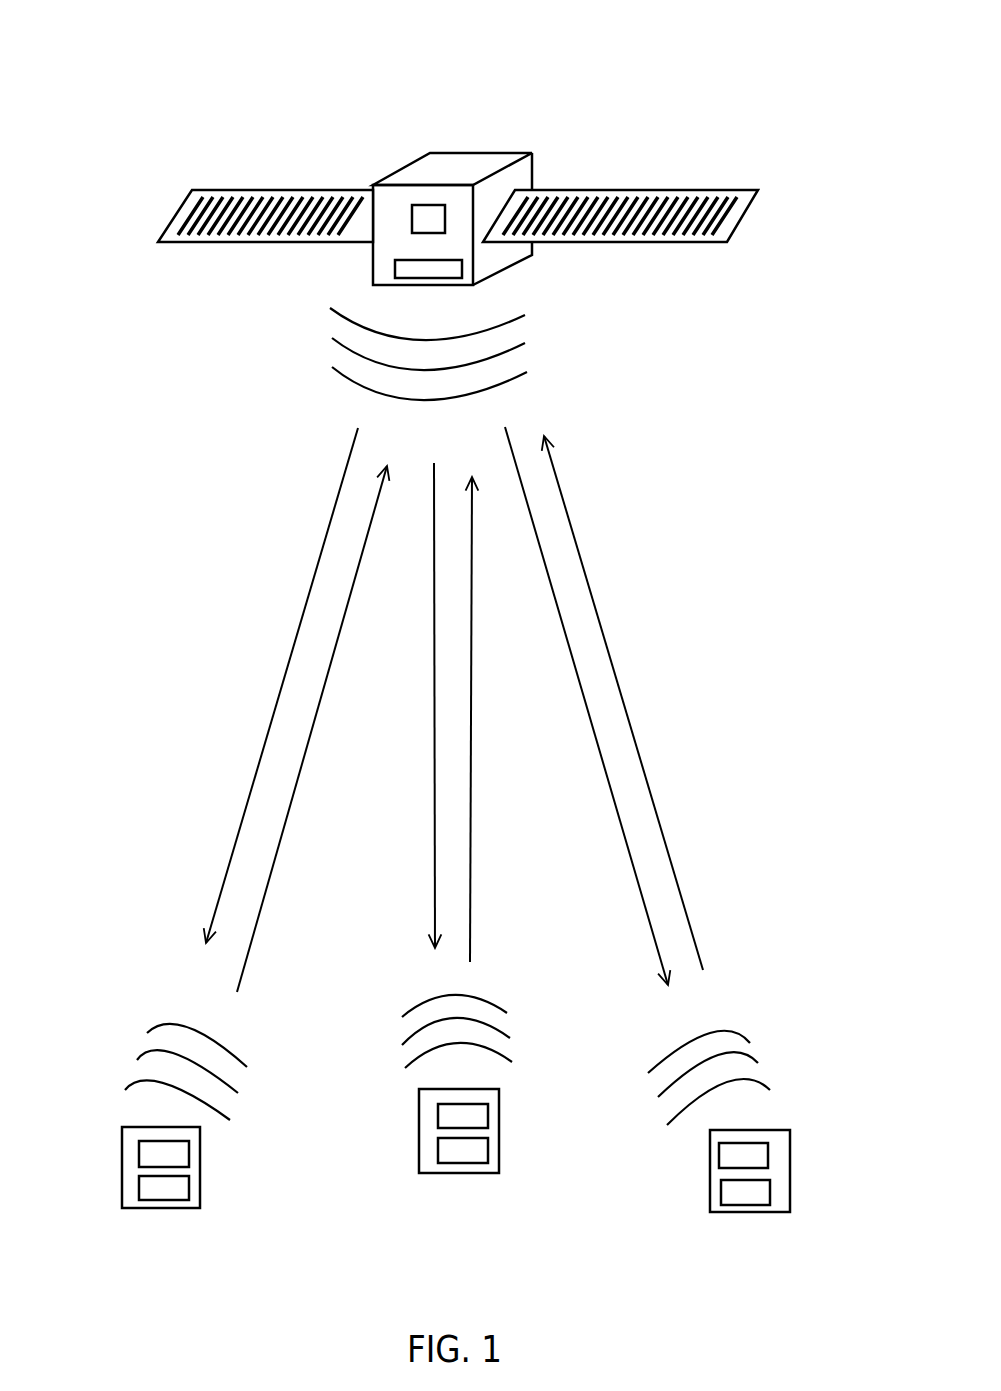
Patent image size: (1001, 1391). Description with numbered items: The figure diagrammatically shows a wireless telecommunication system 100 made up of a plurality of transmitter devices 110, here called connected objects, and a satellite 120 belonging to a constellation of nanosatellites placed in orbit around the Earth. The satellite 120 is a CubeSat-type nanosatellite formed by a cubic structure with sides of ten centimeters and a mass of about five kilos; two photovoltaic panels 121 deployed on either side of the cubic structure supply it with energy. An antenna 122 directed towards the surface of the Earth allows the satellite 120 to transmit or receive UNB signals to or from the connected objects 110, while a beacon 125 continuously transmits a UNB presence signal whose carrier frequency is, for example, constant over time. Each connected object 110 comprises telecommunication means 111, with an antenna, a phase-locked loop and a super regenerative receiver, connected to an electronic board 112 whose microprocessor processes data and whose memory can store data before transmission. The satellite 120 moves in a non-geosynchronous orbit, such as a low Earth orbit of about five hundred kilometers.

The wireless telecommunication system 100 is at (86, 105).
The transmitter device 110 is at (456, 1146).
The telecommunication means 111 is at (172, 1152).
The electronic board 112 is at (168, 1193).
The satellite 120 is at (369, 207).
The photovoltaic panel 121 is at (232, 193).
The antenna 122 is at (410, 263).
The beacon 125 is at (428, 205).